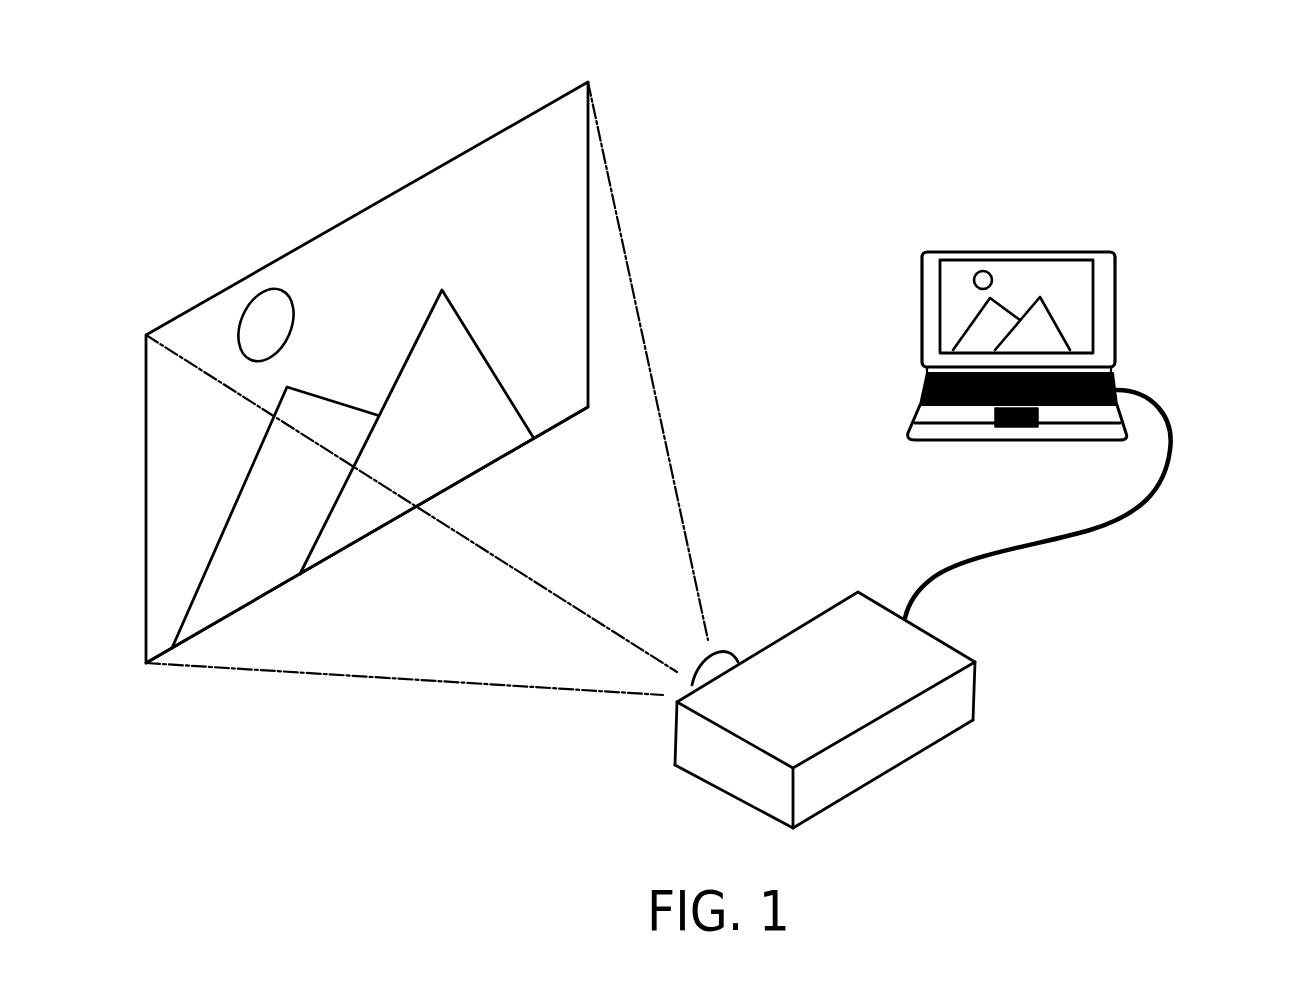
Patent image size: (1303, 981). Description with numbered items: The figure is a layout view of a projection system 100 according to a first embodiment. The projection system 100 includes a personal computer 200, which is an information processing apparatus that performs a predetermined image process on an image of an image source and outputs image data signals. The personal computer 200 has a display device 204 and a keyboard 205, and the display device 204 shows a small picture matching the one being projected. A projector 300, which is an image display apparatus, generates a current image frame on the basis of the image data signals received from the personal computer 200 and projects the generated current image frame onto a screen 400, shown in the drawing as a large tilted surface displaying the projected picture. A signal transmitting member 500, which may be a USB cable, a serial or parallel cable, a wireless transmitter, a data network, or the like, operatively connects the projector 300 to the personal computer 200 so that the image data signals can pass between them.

The projection system 100 is at (714, 423).
The personal computer 200 is at (1047, 327).
The display device 204 is at (953, 292).
The keyboard 205 is at (923, 383).
The projector 300 is at (905, 752).
The screen 400 is at (533, 118).
The signal transmitting member 500 is at (1170, 487).